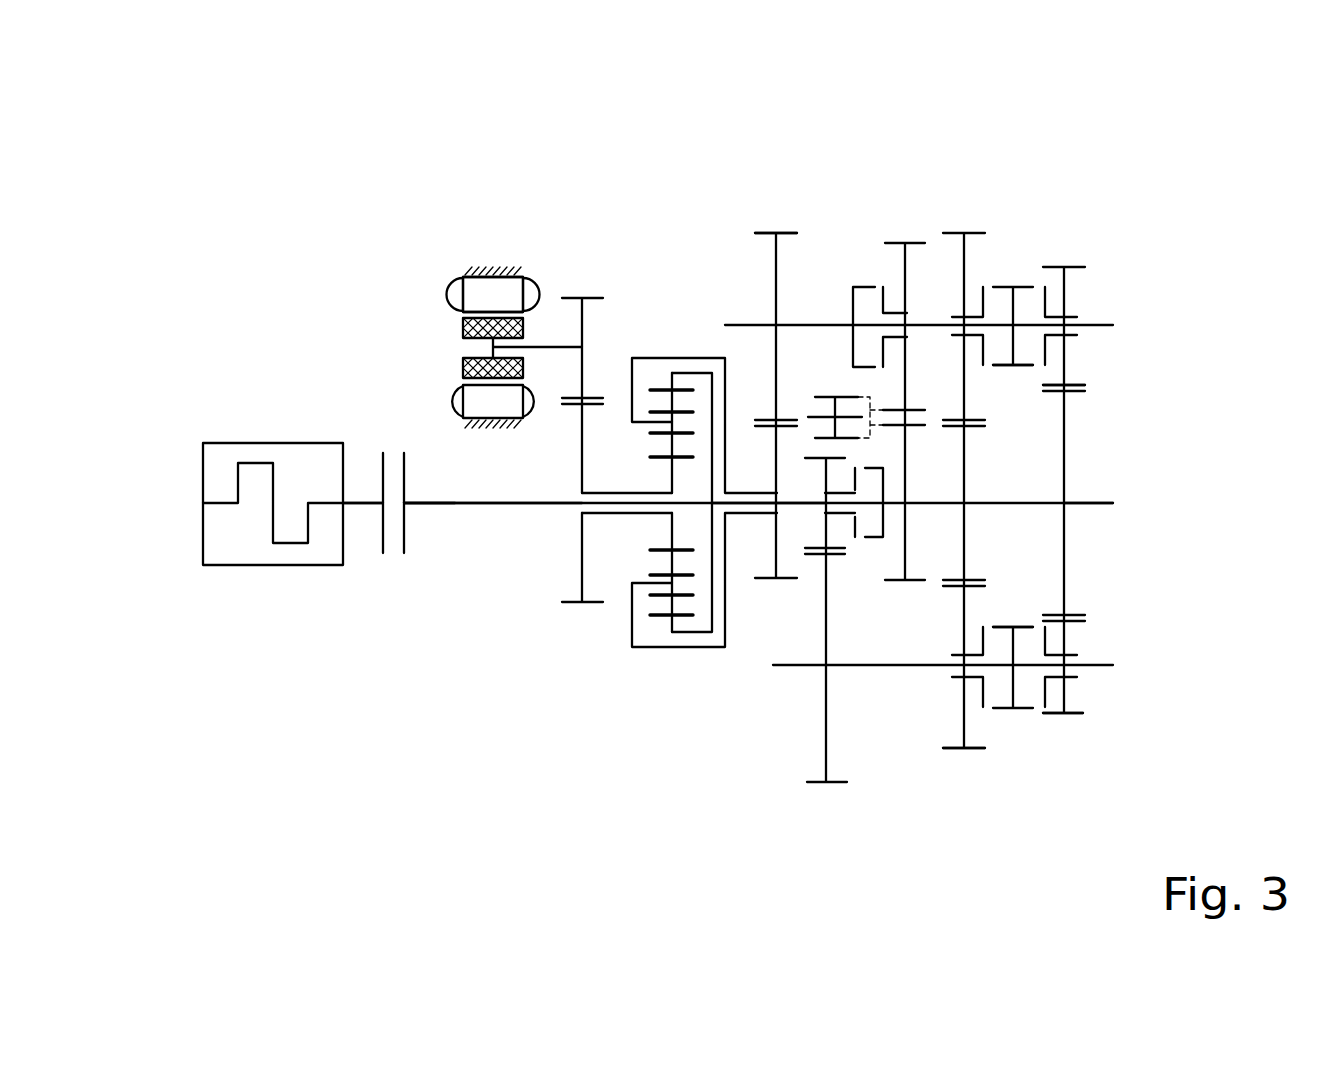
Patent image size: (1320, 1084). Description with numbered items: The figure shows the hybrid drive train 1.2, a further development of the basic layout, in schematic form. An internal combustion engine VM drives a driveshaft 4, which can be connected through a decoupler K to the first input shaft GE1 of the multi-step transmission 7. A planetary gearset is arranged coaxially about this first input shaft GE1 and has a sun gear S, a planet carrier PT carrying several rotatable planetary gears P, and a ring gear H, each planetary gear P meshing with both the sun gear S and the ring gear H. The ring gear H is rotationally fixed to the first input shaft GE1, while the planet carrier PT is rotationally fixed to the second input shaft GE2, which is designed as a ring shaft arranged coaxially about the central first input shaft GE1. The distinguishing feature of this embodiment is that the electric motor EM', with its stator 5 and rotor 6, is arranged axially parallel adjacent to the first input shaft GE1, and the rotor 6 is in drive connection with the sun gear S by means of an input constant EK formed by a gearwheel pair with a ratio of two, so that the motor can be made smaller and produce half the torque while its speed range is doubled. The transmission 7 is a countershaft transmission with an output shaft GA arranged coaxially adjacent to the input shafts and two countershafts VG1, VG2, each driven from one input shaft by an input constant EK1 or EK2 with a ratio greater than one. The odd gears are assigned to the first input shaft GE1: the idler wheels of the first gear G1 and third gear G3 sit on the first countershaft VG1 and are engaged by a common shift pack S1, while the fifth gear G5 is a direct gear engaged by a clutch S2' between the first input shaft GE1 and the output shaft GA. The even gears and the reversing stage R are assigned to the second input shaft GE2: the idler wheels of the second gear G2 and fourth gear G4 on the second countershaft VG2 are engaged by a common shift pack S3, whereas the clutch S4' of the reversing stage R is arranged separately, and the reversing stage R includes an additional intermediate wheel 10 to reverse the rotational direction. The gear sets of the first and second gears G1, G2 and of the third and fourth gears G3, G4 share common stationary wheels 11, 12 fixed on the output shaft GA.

The internal combustion engine VM is at (242, 523).
The decoupler K is at (393, 562).
The driveshaft 4 is at (365, 503).
The first input shaft GE1 is at (455, 503).
The hybrid drive train 1.2 is at (412, 663).
The electric motor EM' is at (435, 262).
The stator 5 is at (472, 292).
The rotor 6 is at (462, 327).
The input constant EK is at (582, 613).
The planet carrier PT is at (632, 392).
The sun gear S is at (672, 530).
The planetary gears P is at (672, 560).
The ring gear H is at (697, 632).
The second input shaft GE2 is at (735, 513).
The multi-step transmission 7 is at (743, 293).
The second input constant EK2 is at (776, 193).
The intermediate wheel 10 is at (835, 397).
The reversing stage R is at (907, 200).
The clutch of the reversing stage S4' is at (875, 232).
The first input constant EK1 is at (813, 695).
The clutch S2' is at (911, 680).
The fifth gear G5 is at (862, 575).
The fourth gear G4 is at (965, 190).
The common stationary wheel 12 is at (965, 462).
The third gear G3 is at (965, 785).
The second countershaft VG2 is at (1098, 323).
The shift pack S3 is at (1013, 375).
The second gear G2 is at (1065, 227).
The common stationary wheel 11 is at (1065, 430).
The first gear G1 is at (1065, 753).
The first countershaft VG1 is at (1090, 663).
The shift pack S1 is at (1015, 617).
The output shaft GA is at (1090, 507).